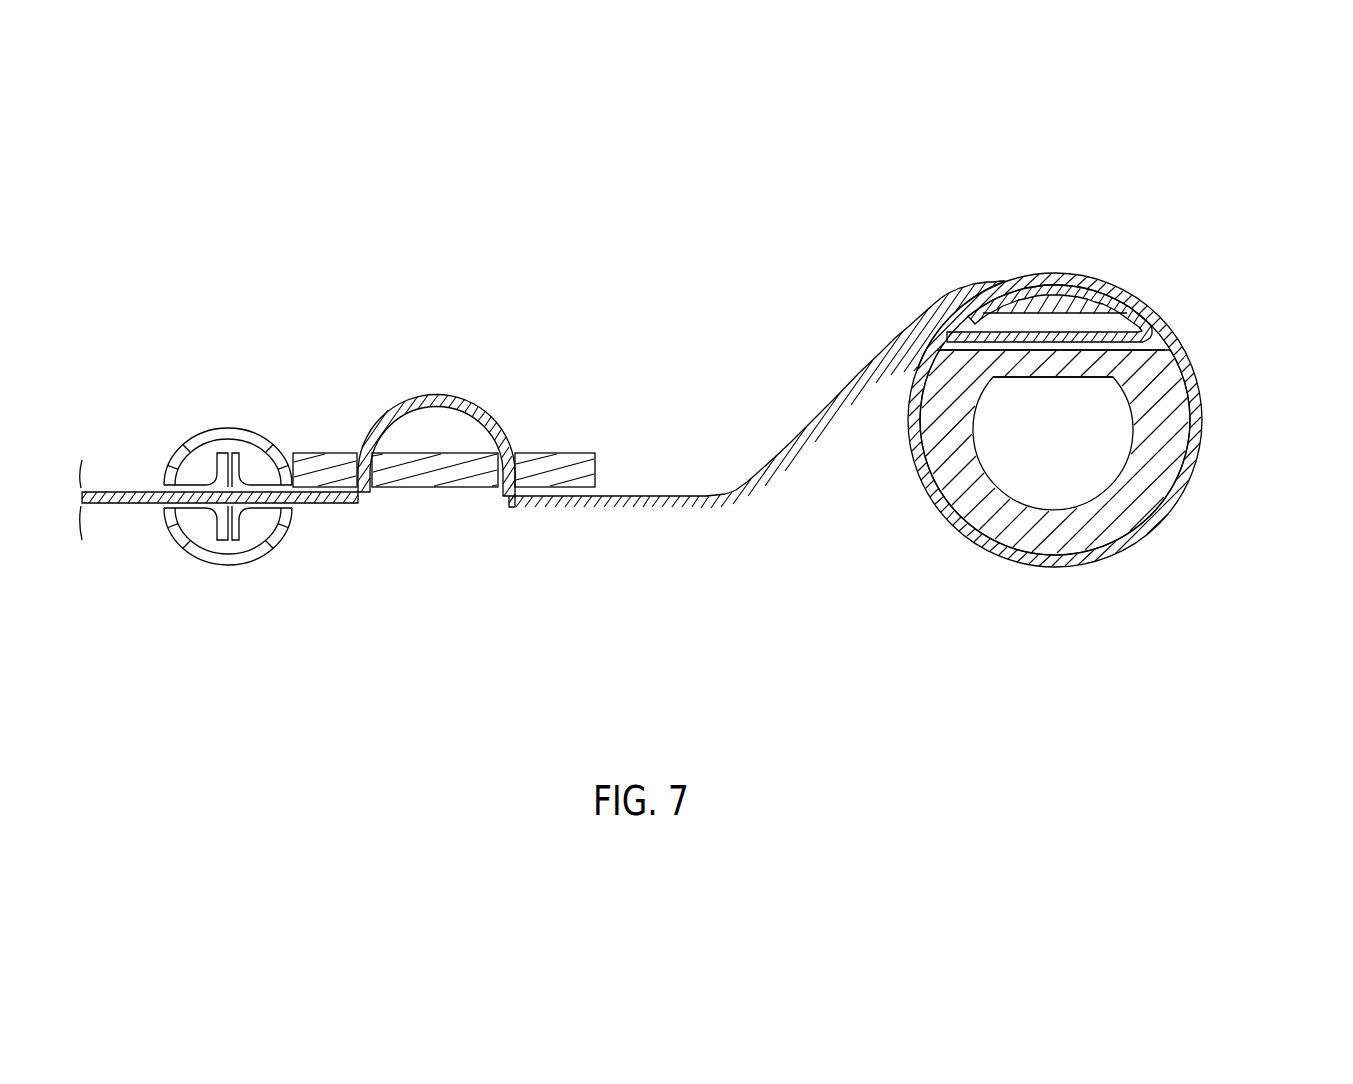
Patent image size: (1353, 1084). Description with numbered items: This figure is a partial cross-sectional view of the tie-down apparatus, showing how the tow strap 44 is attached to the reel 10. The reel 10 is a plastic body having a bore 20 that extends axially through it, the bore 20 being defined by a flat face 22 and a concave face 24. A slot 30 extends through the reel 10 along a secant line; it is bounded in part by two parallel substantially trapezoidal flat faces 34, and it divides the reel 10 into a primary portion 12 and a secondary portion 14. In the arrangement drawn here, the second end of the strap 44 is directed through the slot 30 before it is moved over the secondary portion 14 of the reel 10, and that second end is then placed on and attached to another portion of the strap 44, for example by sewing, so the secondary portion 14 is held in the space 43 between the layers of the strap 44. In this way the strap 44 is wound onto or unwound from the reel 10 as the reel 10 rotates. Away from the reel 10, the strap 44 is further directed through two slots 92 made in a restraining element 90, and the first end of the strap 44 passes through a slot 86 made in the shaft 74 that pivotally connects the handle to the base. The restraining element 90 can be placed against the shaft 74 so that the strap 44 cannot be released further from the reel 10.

The reel 10 is at (1262, 268).
The primary portion 12 is at (1155, 451).
The secondary portion 14 is at (1088, 305).
The bore 20 is at (1213, 602).
The flat face 22 is at (1077, 377).
The concave face 24 is at (1022, 495).
The slot 30 is at (1140, 349).
The substantially trapezoidal flat face 34 is at (1042, 316).
The space 43 is at (958, 322).
The tow strap 44 is at (695, 510).
The shaft 74 is at (242, 560).
The slot 86 is at (157, 478).
The restraining element 90 is at (312, 460).
The slot 92 is at (373, 487).